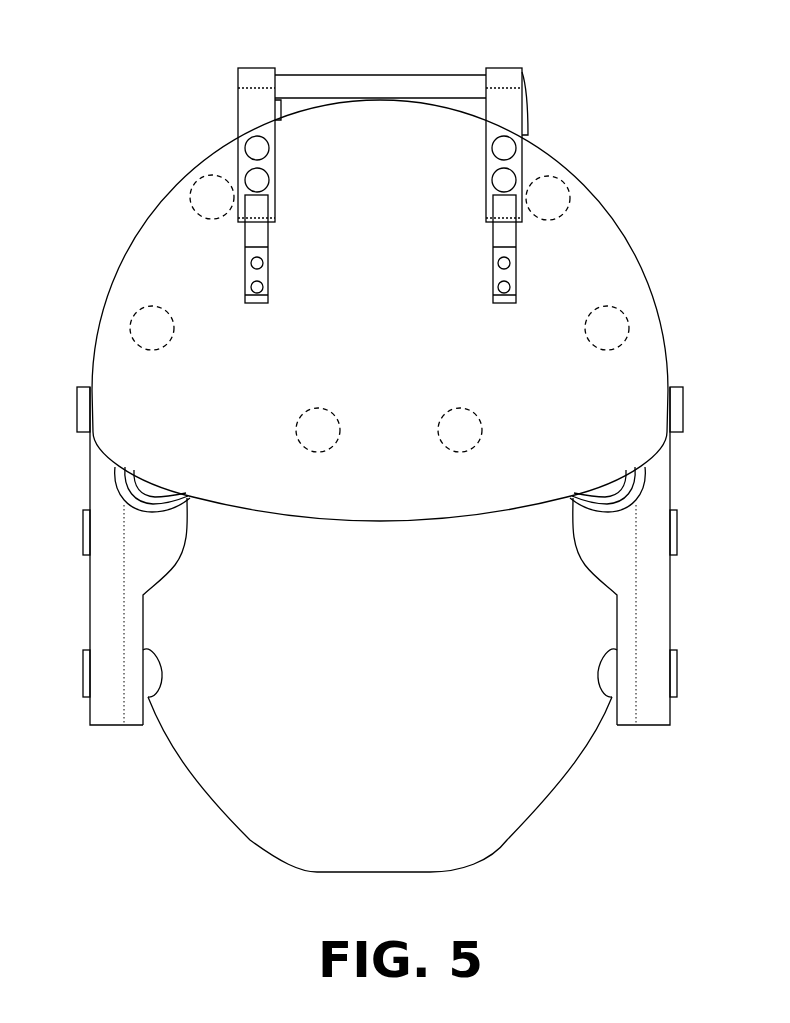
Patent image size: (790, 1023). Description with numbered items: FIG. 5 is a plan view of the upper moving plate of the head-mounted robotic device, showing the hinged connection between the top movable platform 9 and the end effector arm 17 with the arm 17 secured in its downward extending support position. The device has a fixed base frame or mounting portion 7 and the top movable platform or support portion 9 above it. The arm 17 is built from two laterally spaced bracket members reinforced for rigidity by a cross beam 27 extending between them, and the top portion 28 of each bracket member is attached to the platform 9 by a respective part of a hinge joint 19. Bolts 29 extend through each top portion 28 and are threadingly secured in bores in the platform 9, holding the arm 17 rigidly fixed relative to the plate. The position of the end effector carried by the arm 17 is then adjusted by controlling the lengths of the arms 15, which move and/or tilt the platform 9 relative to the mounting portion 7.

The fixed base frame 7 is at (111, 678).
The top movable platform 9 is at (210, 420).
The arms 15 is at (212, 197).
The end effector arm 17 is at (332, 83).
The hinge joint 19 is at (308, 213).
The cross beam 27 is at (420, 83).
The top portion 28 is at (253, 103).
The bolts 29 is at (255, 180).